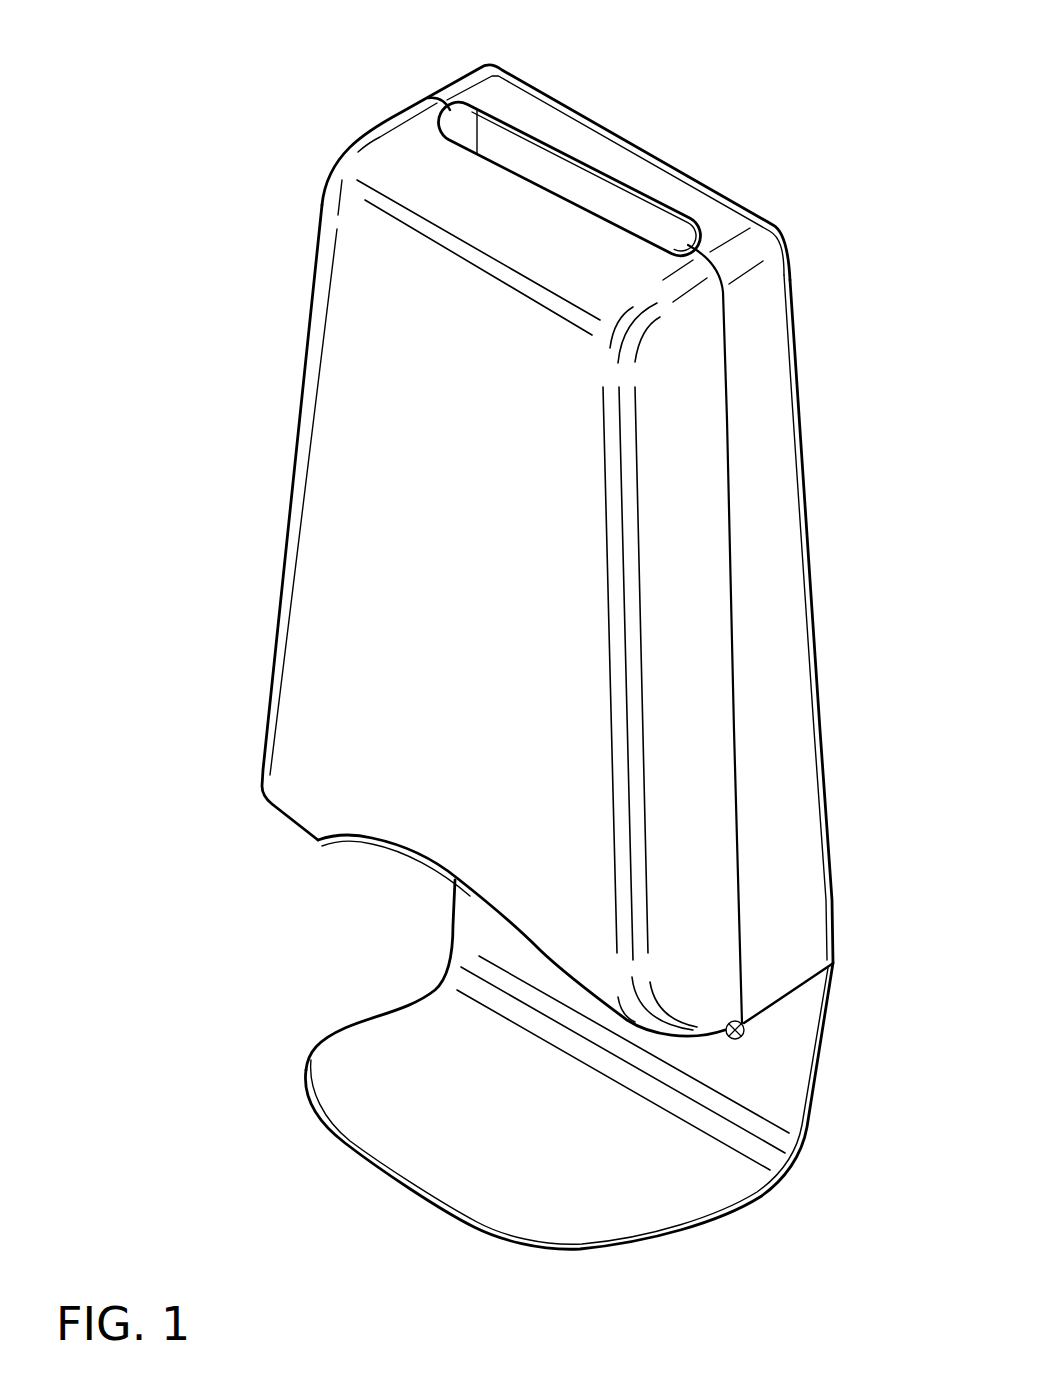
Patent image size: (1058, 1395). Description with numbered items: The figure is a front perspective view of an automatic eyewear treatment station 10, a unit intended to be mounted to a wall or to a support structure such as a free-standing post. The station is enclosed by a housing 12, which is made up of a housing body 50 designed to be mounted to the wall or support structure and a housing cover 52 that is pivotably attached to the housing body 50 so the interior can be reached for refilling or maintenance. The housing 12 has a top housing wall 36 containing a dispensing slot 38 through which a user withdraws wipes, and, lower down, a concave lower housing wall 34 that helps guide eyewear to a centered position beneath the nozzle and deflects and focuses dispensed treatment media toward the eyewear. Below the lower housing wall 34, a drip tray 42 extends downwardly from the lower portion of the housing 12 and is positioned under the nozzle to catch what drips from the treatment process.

The automatic eyewear treatment station 10 is at (138, 205).
The housing 12 is at (276, 530).
The lower housing wall 34 is at (423, 873).
The top housing wall 36 is at (423, 90).
The dispensing slot 38 is at (583, 182).
The drip tray 42 is at (415, 1150).
The housing body 50 is at (770, 503).
The housing cover 52 is at (336, 717).